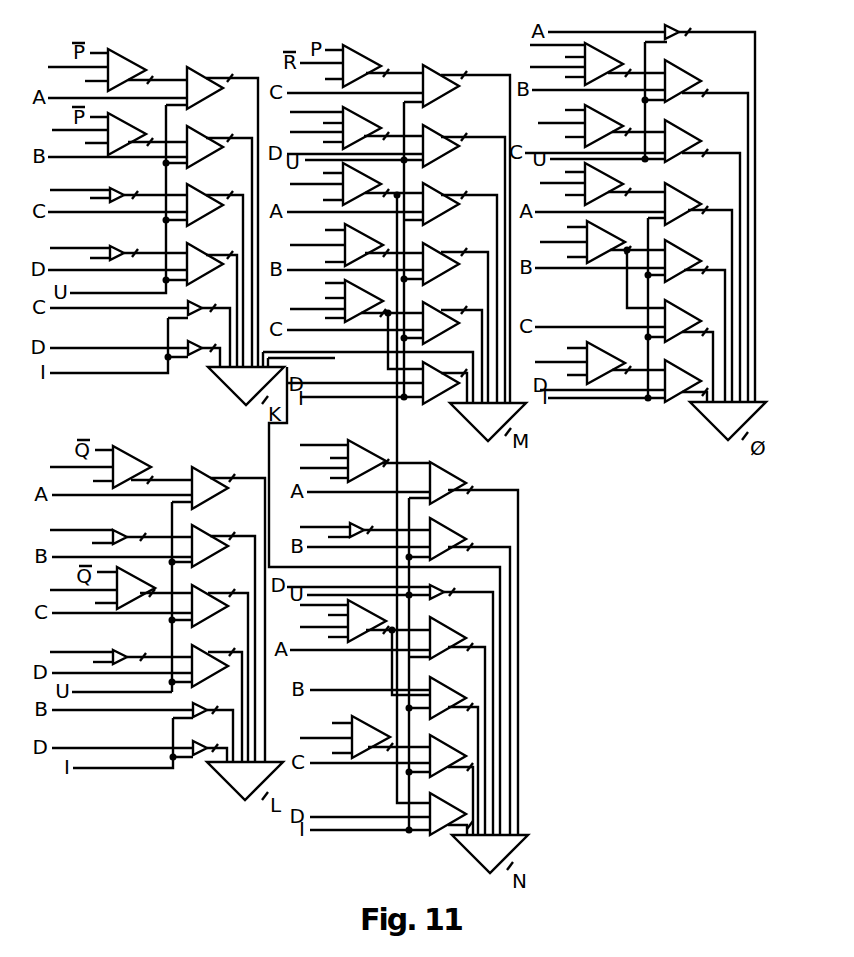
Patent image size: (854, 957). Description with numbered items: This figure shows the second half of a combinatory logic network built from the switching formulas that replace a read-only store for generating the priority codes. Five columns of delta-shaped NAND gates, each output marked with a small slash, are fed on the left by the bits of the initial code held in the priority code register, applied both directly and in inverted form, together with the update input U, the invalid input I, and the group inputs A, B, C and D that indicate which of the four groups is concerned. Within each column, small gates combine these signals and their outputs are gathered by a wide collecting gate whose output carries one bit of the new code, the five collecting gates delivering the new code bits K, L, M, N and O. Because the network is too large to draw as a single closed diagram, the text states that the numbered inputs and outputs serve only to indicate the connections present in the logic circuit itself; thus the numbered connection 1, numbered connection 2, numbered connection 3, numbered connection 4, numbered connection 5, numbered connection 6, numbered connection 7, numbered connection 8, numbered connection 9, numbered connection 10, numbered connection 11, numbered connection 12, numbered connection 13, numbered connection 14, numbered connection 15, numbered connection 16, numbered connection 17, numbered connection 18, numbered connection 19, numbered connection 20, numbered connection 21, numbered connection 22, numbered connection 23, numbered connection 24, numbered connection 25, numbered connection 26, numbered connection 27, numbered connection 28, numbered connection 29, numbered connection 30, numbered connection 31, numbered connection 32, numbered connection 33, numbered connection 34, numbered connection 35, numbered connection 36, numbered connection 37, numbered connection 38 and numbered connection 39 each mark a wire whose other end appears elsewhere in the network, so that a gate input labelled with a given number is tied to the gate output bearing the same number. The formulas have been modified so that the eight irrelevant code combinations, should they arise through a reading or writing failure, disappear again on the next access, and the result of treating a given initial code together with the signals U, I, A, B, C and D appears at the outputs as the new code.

The numbered connection 1 is at (311, 410).
The numbered connection 2 is at (334, 334).
The numbered connection 3 is at (312, 425).
The numbered connection 4 is at (76, 527).
The numbered connection 5 is at (555, 182).
The numbered connection 6 is at (330, 447).
The numbered connection 7 is at (310, 177).
The numbered connection 8 is at (568, 109).
The numbered connection 9 is at (448, 163).
The numbered connection 10 is at (90, 480).
The numbered connection 11 is at (313, 737).
The numbered connection 12 is at (311, 333).
The numbered connection 13 is at (550, 241).
The numbered connection 14 is at (320, 122).
The numbered connection 15 is at (65, 66).
The numbered connection 16 is at (303, 131).
The numbered connection 17 is at (562, 56).
The numbered connection 18 is at (311, 444).
The numbered connection 19 is at (322, 261).
The numbered connection 20 is at (325, 415).
The numbered connection 21 is at (322, 317).
The numbered connection 22 is at (304, 308).
The numbered connection 23 is at (325, 614).
The numbered connection 24 is at (87, 227).
The numbered connection 25 is at (322, 297).
The numbered connection 26 is at (306, 251).
The numbered connection 27 is at (312, 526).
The numbered connection 28 is at (562, 194).
The numbered connection 29 is at (326, 536).
The numbered connection 30 is at (562, 76).
The numbered connection 31 is at (311, 626).
The numbered connection 32 is at (90, 661).
The numbered connection 33 is at (86, 342).
The numbered connection 34 is at (548, 122).
The numbered connection 35 is at (83, 80).
The numbered connection 36 is at (325, 636).
The numbered connection 37 is at (320, 141).
The numbered connection 38 is at (562, 136).
The numbered connection 39 is at (325, 477).